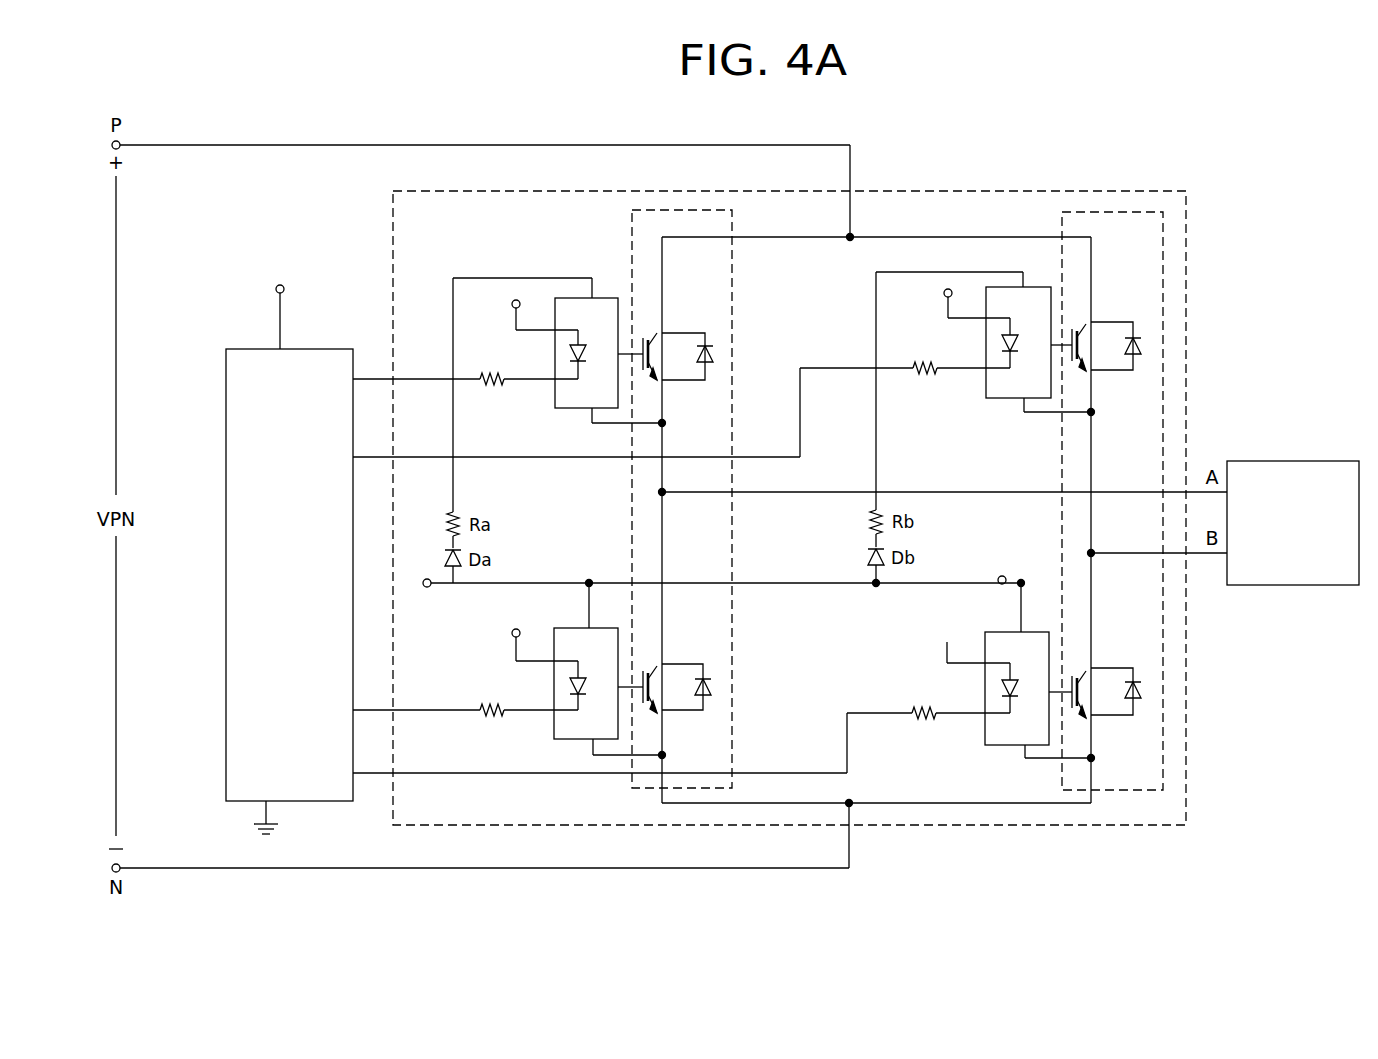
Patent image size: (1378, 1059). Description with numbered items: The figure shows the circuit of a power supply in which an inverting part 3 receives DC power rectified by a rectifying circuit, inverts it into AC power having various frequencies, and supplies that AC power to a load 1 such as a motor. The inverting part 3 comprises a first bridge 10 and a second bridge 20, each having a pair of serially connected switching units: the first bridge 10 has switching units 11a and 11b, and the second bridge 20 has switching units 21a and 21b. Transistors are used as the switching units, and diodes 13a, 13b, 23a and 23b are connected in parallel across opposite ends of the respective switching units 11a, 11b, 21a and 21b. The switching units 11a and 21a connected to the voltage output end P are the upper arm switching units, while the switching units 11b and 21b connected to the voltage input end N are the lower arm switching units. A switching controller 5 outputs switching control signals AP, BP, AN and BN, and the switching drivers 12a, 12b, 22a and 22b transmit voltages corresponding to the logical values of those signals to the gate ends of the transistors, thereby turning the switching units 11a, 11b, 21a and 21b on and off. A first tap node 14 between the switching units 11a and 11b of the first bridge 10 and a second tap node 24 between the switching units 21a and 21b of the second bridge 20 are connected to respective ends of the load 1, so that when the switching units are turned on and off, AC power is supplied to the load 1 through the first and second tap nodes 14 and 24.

The load 1 is at (1290, 461).
The inverting part 3 is at (751, 190).
The switching controller 5 is at (226, 583).
The first bridge 10 is at (1125, 210).
The upper arm switching unit 11a is at (1077, 327).
The lower arm switching unit 11b is at (1078, 675).
The switching driver 12a is at (993, 284).
The switching driver 12b is at (998, 745).
The diode 13a is at (1140, 338).
The diode 13b is at (1142, 683).
The first tap node 14 is at (1091, 553).
The second bridge 20 is at (667, 210).
The upper arm switching unit 21a is at (650, 338).
The lower arm switching unit 21b is at (648, 665).
The switching driver 22a is at (555, 408).
The switching driver 22b is at (554, 739).
The diode 23a is at (710, 350).
The diode 23b is at (708, 683).
The second tap node 24 is at (662, 492).